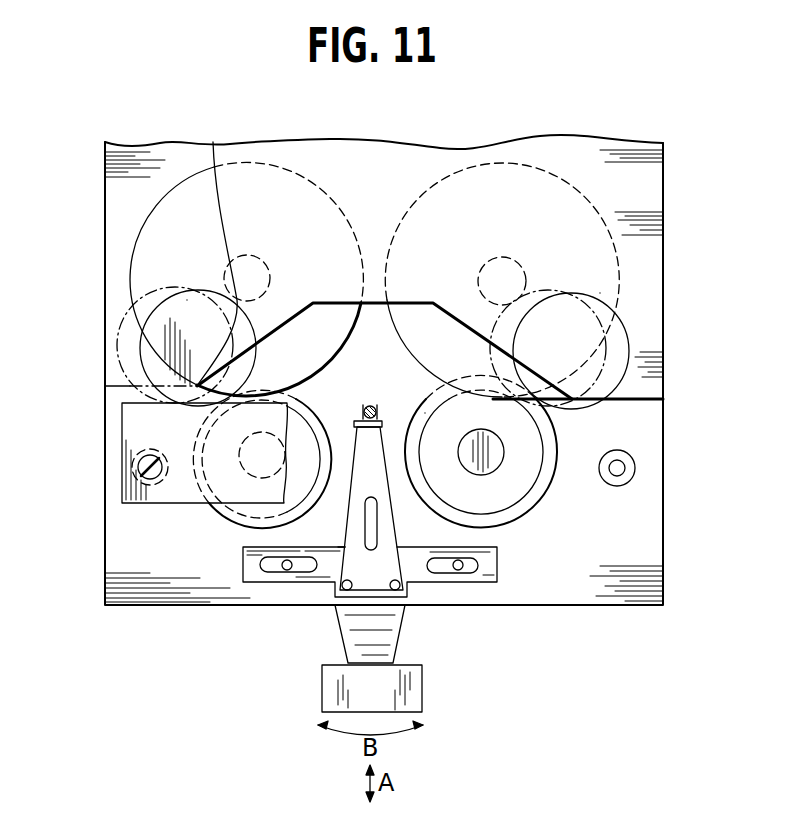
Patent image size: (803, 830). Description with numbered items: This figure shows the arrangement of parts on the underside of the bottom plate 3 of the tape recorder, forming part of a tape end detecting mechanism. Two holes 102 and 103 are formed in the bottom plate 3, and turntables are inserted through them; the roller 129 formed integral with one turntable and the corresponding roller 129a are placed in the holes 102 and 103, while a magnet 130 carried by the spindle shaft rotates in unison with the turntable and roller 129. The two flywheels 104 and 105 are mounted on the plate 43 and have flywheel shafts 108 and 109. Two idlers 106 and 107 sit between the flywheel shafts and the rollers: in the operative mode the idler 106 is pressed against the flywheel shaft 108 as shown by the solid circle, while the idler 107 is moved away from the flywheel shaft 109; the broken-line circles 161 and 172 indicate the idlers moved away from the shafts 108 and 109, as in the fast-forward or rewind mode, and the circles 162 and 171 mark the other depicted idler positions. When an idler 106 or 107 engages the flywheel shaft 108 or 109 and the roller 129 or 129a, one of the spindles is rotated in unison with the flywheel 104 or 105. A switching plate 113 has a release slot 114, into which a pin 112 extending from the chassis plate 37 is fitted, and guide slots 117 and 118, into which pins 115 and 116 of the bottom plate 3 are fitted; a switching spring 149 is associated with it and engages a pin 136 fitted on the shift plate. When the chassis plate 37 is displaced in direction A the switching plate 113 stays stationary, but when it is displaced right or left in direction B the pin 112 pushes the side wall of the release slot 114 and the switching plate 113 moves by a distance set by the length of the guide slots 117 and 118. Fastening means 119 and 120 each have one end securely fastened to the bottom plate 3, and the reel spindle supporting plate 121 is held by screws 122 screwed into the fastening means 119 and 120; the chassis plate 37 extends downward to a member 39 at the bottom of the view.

The bottom plate 3 is at (156, 588).
The chassis plate 37 is at (392, 636).
The drive block 39 is at (415, 686).
The plate 43 is at (657, 234).
The hole 102 is at (223, 517).
The hole 103 is at (530, 497).
The flywheel 104 is at (333, 190).
The flywheel 105 is at (572, 182).
The idler 106 is at (210, 234).
The idler 107 is at (585, 234).
The flywheel shaft 108 is at (263, 257).
The flywheel shaft 109 is at (487, 257).
The pin 112 is at (371, 509).
The switching plate 113 is at (328, 568).
The release slot 114 is at (373, 522).
The pin 115 is at (286, 572).
The pin 116 is at (460, 571).
The guide slot 117 is at (262, 562).
The guide slot 118 is at (498, 563).
The fastening means 119 is at (135, 468).
The fastening means 120 is at (620, 487).
The reel spindle supporting plate 121 is at (128, 503).
The screw 122 is at (148, 455).
The roller 129 is at (305, 400).
The roller 129a is at (425, 413).
The magnet 130 is at (243, 468).
The pin 136 is at (370, 404).
The switching spring 149 is at (333, 545).
The broken-line circle 161 is at (163, 285).
The roller position 162 is at (187, 302).
The roller alternate position 171 is at (537, 290).
The circle 172 is at (600, 293).